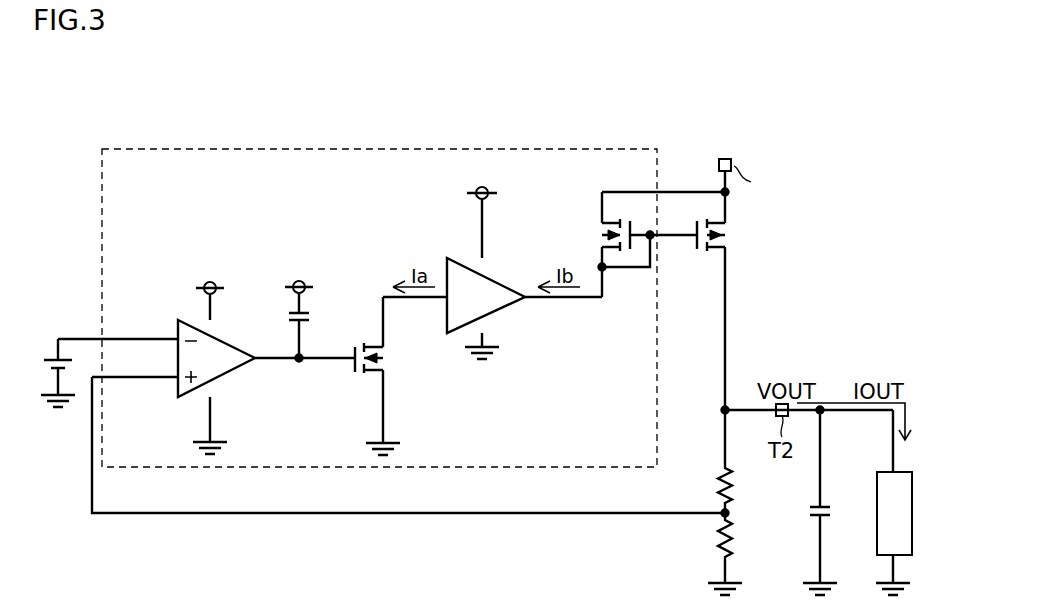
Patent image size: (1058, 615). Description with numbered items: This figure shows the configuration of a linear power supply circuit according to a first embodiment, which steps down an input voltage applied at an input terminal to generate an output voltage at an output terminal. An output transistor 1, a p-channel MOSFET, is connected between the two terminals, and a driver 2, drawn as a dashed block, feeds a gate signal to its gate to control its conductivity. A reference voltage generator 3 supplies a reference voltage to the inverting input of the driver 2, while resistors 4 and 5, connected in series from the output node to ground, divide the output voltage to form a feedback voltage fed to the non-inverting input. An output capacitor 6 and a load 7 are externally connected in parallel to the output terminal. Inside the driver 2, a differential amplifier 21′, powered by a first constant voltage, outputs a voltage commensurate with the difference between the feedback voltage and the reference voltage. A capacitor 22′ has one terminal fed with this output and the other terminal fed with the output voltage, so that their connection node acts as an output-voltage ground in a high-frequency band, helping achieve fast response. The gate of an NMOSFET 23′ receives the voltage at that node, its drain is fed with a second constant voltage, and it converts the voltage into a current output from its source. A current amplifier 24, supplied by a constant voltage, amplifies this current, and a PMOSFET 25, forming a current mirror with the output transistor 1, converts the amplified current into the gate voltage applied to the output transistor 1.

The output transistor 1 is at (732, 233).
The driver 2 is at (403, 148).
The reference voltage generator 3 is at (44, 360).
The resistor 4 is at (735, 486).
The resistor 5 is at (735, 537).
The output capacitor 6 is at (832, 512).
The load 7 is at (922, 501).
The differential amplifier 21′ is at (221, 336).
The capacitor 22′ is at (311, 318).
The NMOSFET 23′ is at (390, 358).
The current amplifier 24 is at (496, 283).
The PMOSFET 25 is at (598, 232).